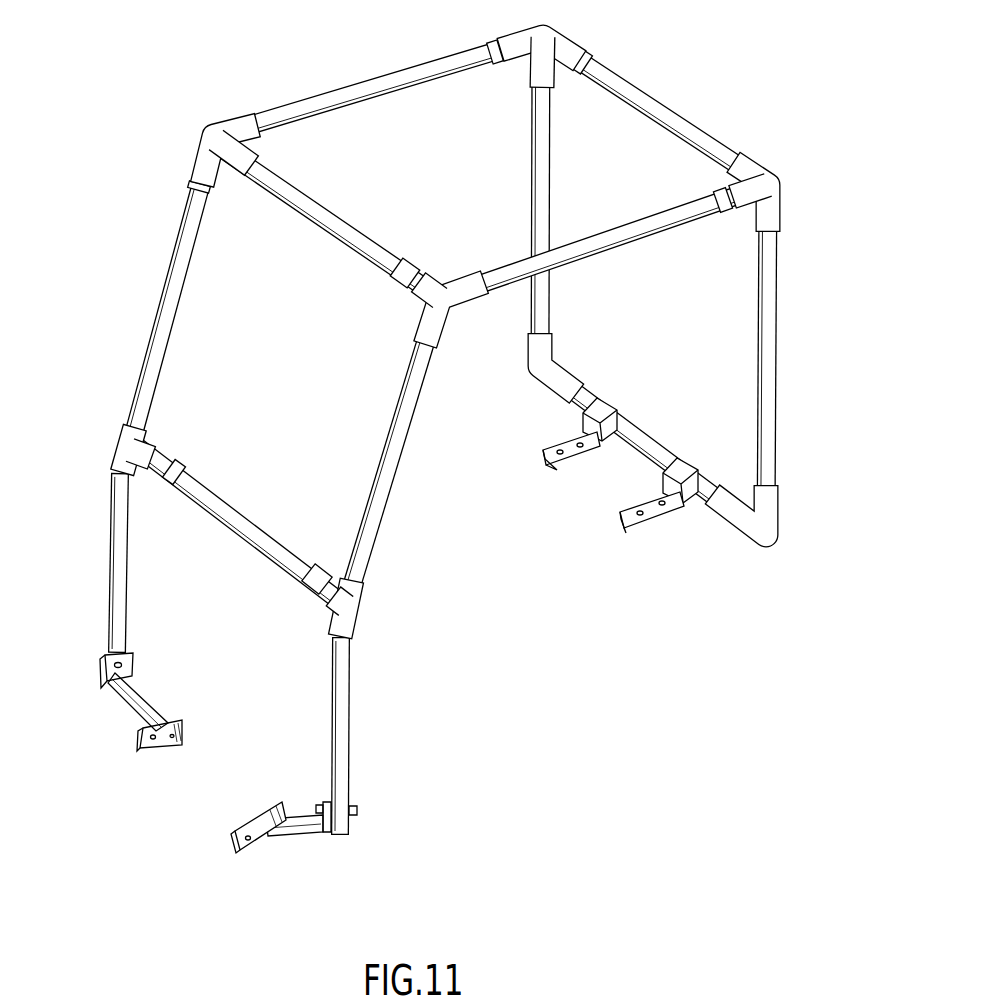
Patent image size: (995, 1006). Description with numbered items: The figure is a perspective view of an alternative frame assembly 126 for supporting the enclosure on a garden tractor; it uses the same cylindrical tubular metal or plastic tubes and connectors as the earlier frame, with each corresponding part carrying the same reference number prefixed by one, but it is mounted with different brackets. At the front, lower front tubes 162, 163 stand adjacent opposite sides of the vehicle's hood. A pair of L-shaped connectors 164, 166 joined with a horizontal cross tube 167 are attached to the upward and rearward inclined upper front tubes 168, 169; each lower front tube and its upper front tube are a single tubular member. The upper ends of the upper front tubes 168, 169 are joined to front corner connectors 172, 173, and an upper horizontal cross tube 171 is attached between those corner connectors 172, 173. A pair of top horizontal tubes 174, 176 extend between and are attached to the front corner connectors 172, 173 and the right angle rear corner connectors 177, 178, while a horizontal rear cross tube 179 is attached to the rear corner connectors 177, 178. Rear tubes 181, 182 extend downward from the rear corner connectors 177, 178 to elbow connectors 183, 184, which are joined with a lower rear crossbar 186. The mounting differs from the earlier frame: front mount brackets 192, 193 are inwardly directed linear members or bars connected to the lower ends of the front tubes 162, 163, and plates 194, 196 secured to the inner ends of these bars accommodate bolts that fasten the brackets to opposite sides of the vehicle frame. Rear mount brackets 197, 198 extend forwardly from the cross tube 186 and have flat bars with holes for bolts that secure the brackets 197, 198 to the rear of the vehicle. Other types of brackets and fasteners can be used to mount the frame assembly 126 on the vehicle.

The frame assembly 126 is at (680, 79).
The lower front tube 162 is at (127, 570).
The lower front tube 163 is at (351, 705).
The L-shaped connector 164 is at (124, 450).
The L-shaped connector 166 is at (362, 612).
The horizontal cross tube 167 is at (212, 493).
The upper front tube 168 is at (158, 323).
The upper front tube 169 is at (393, 488).
The upper horizontal cross tube 171 is at (325, 232).
The corner connector 172 is at (196, 165).
The corner connector 173 is at (436, 332).
The top horizontal tube 174 is at (362, 90).
The top horizontal tube 176 is at (612, 242).
The right angle rear corner connector 177 is at (520, 37).
The right angle rear corner connector 178 is at (783, 194).
The horizontal rear cross tube 179 is at (676, 118).
The rear tube 181 is at (546, 188).
The rear tube 182 is at (773, 375).
The elbow connector 183 is at (547, 383).
The elbow connector 184 is at (771, 520).
The lower rear crossbar 186 is at (636, 433).
The front mount bracket 192 is at (137, 690).
The front mount bracket 193 is at (292, 832).
The plate 194 is at (145, 748).
The plate 196 is at (236, 850).
The rear mount bracket 197 is at (552, 470).
The rear mount bracket 198 is at (640, 532).